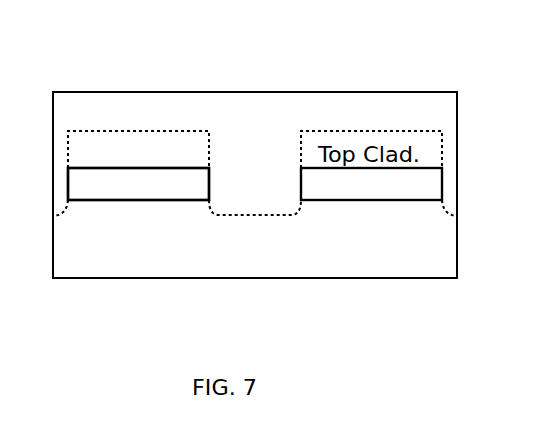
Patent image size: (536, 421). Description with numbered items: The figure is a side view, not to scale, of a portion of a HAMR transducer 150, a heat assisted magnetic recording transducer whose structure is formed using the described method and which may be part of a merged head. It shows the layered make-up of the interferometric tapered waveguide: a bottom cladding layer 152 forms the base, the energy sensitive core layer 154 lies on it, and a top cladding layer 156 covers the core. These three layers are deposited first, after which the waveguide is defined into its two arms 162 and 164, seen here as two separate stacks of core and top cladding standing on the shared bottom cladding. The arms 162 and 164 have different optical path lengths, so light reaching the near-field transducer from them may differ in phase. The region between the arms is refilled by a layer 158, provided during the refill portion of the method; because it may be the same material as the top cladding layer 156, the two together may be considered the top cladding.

The HAMR transducer 150 is at (243, 41).
The bottom cladding layer 152 is at (162, 278).
The energy sensitive core layer 154 is at (47, 189).
The top cladding layer 156 is at (47, 151).
The top cladding refill layer 158 is at (222, 132).
The arm of the ITWG 162 is at (365, 221).
The arm of the ITWG 164 is at (136, 219).